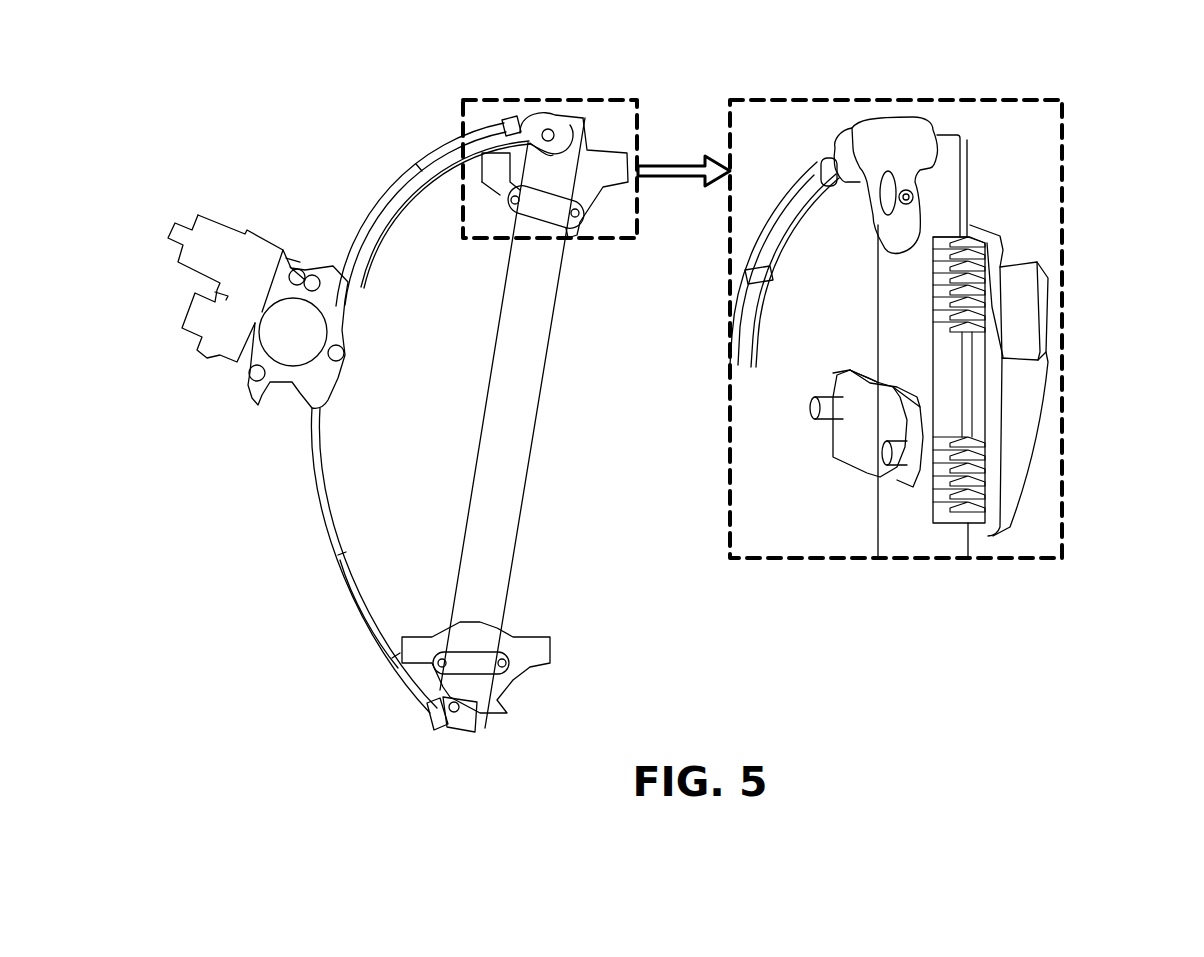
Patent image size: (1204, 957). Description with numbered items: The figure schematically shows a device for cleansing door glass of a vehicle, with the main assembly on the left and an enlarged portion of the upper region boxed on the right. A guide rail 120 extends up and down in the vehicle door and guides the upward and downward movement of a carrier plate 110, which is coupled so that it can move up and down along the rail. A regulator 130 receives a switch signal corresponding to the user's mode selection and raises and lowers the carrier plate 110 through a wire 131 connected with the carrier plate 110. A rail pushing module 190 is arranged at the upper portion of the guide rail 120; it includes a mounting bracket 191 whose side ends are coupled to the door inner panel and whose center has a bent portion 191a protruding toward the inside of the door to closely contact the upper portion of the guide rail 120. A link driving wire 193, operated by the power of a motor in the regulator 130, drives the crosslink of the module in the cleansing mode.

The carrier plate 110 is at (615, 150).
The guide rail 120 is at (943, 530).
The regulator 130 is at (262, 412).
The wire 131 is at (437, 143).
The rail pushing module 190 is at (568, 240).
The mounting bracket 191 is at (830, 453).
The bent portion 191a is at (840, 393).
The link driving wire 193 is at (363, 220).